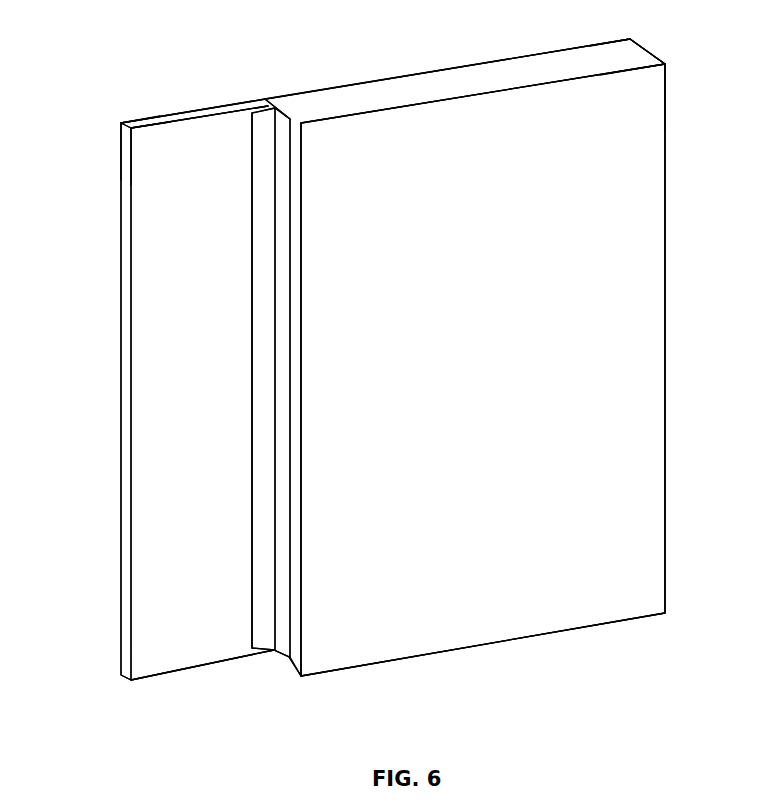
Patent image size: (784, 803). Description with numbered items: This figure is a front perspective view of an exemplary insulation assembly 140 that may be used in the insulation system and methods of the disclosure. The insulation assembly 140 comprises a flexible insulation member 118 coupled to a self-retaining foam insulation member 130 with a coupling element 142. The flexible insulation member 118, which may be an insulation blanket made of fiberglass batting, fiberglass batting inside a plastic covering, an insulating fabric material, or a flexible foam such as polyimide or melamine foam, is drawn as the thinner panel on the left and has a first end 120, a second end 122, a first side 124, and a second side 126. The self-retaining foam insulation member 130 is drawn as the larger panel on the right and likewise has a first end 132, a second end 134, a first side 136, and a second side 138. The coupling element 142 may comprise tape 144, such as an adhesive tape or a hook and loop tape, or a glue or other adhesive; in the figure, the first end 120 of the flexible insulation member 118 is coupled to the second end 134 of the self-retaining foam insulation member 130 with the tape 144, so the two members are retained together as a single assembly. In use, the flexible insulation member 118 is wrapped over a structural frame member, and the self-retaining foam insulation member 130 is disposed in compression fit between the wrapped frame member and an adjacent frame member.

The flexible insulation member 118 is at (200, 636).
The first end 120 is at (264, 100).
The second end 122 is at (132, 118).
The first side 124 is at (195, 150).
The second side 126 is at (145, 245).
The self-retaining foam insulation member 130 is at (535, 600).
The first end 132 is at (647, 50).
The second end 134 is at (287, 112).
The first side 136 is at (483, 103).
The second side 138 is at (645, 335).
The insulation assembly 140 is at (700, 161).
The coupling element 142 is at (250, 286).
The tape 144 is at (263, 357).